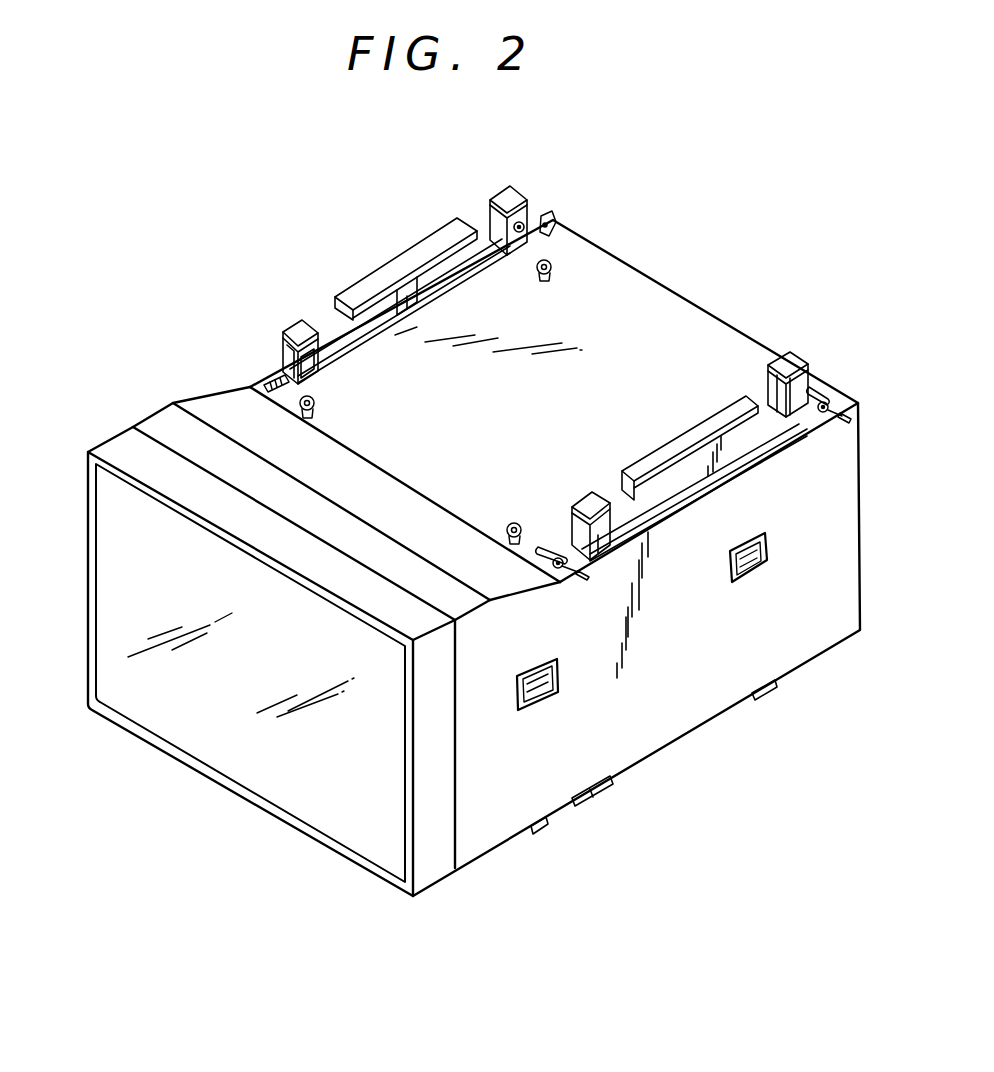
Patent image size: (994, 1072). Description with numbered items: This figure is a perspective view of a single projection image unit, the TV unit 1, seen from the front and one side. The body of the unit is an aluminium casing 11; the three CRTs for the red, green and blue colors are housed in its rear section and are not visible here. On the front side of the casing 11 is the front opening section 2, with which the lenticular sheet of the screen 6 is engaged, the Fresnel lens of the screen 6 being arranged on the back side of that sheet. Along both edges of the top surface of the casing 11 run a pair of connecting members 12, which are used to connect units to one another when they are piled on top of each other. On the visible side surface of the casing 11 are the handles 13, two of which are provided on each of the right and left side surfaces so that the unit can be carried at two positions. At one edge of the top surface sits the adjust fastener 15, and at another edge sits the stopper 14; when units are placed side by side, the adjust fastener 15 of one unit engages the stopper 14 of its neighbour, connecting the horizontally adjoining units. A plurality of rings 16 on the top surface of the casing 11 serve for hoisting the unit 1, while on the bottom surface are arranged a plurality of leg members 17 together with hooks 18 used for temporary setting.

The TV unit 1 is at (656, 277).
The front opening section 2 is at (104, 662).
The screen 6 is at (248, 767).
The casing 11 is at (687, 717).
The connecting member 12 is at (348, 292).
The handle 13 is at (538, 705).
The stopper 14 is at (267, 378).
The adjust fastener 15 is at (556, 552).
The ring 16 is at (300, 410).
The leg member 17 is at (540, 835).
The hook 18 is at (597, 808).